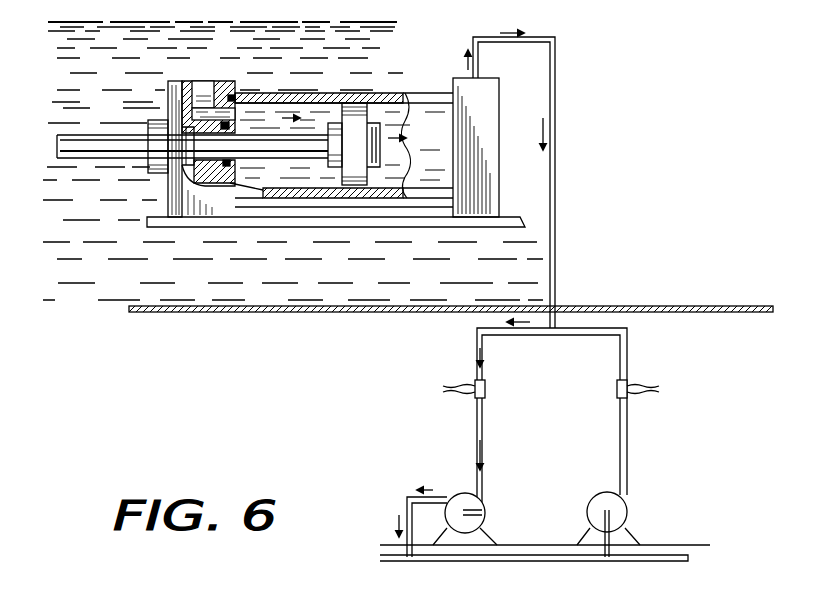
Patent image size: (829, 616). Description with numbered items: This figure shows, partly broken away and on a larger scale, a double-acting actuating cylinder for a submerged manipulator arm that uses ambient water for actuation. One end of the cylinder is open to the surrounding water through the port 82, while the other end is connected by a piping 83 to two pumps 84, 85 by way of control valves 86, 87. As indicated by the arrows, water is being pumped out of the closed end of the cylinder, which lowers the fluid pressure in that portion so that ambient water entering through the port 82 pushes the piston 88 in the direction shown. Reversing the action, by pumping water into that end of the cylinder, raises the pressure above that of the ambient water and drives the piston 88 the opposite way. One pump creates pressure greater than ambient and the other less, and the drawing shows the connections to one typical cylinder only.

The port 82 is at (204, 90).
The piping 83 is at (556, 141).
The pump 84 is at (487, 515).
The pump 85 is at (593, 494).
The control valve 86 is at (486, 386).
The control valve 87 is at (616, 384).
The piston 88 is at (361, 123).